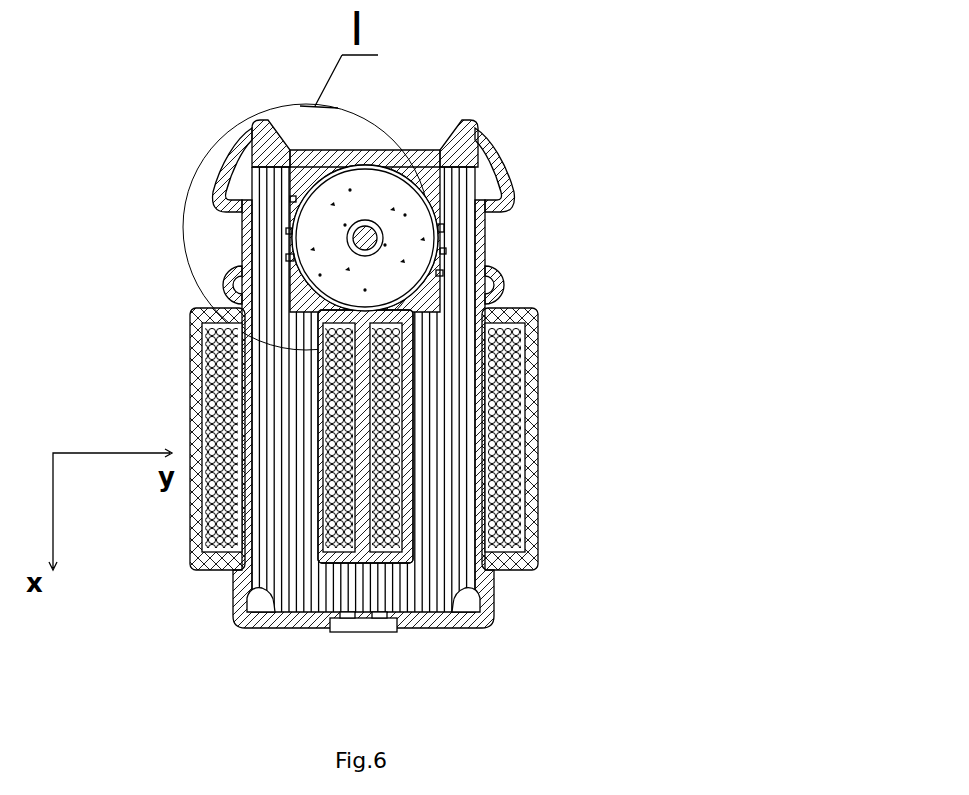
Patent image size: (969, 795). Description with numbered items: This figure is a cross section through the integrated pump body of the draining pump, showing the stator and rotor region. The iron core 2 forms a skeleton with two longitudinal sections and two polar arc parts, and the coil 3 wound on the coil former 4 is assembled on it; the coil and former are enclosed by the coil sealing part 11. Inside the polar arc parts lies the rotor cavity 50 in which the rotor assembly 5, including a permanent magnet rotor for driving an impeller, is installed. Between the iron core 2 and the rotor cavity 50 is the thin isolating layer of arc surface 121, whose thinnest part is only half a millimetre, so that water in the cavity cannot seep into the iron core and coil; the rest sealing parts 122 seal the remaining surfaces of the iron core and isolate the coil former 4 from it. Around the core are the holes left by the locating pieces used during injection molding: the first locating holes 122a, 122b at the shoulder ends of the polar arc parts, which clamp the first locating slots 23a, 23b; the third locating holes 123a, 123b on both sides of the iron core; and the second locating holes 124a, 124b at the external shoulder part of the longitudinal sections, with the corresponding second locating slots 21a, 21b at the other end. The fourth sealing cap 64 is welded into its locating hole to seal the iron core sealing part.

The iron core 2 is at (460, 342).
The coil 3 is at (510, 388).
The coil former 4 is at (490, 490).
The rotor assembly 5 is at (415, 273).
The coil sealing part 11 is at (555, 439).
The second locating slot 21a is at (265, 603).
The second locating slot 21b is at (467, 602).
The first locating slot 23a is at (270, 155).
The first locating slot 23b is at (465, 123).
The rotor cavity 50 is at (292, 258).
The fourth sealing cap 64 is at (368, 618).
The isolating layer of arc surface 121 is at (442, 228).
The rest sealing parts 122 is at (482, 532).
The first locating hole 122a is at (222, 176).
The first locating hole 122b is at (485, 182).
The third locating hole 123a is at (242, 282).
The third locating hole 123b is at (487, 281).
The second locating hole 124a is at (253, 607).
The second locating hole 124b is at (492, 617).